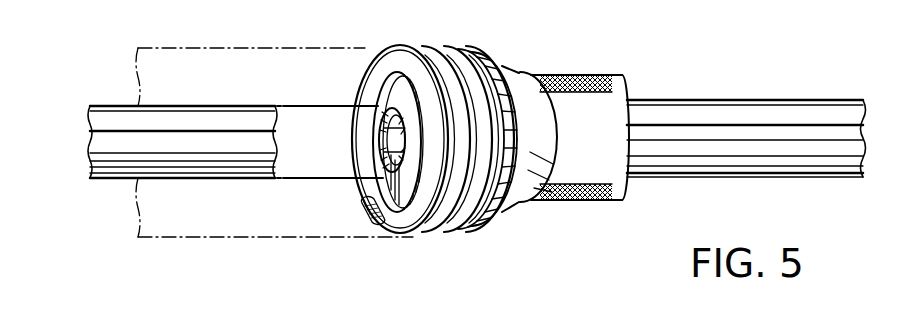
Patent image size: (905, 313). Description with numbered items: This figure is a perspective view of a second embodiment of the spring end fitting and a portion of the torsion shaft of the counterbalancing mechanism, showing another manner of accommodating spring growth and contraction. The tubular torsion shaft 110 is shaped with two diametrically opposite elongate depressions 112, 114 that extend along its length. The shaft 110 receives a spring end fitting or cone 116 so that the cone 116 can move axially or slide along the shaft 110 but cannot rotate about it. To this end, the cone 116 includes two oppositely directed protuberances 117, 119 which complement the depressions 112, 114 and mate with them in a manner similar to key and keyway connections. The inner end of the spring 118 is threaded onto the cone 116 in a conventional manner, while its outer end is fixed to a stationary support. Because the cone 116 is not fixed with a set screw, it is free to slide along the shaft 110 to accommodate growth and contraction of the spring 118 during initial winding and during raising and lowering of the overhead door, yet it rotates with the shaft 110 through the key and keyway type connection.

The torsion shaft 110 is at (104, 180).
The elongate depression 112 is at (376, 133).
The elongate depression 114 is at (380, 149).
The spring end fitting or cone 116 is at (523, 73).
The protuberance 117 is at (402, 114).
The spring 118 is at (413, 233).
The protuberance 119 is at (352, 180).